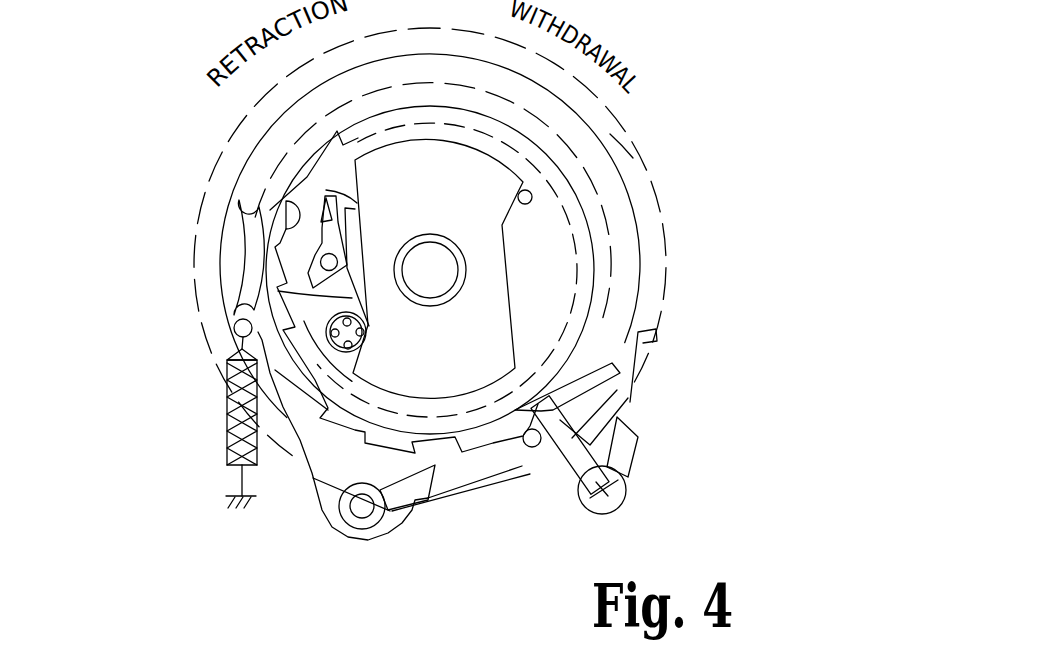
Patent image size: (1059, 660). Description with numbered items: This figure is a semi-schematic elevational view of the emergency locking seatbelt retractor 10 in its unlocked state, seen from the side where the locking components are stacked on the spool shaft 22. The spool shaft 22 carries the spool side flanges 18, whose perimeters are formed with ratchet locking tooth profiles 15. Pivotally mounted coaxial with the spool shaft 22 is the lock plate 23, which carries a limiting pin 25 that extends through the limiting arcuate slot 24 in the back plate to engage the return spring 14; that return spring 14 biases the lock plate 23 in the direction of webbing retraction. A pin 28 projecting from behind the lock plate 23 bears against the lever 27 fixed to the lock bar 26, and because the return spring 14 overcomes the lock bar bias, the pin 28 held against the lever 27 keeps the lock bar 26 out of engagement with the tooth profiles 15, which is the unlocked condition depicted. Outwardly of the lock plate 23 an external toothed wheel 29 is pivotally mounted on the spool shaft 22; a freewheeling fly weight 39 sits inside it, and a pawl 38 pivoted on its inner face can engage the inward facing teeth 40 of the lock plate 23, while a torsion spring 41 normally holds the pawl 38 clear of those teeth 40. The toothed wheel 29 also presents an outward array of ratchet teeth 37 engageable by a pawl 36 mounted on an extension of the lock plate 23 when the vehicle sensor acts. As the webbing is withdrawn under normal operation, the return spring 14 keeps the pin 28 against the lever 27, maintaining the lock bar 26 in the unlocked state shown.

The emergency locking seatbelt retractor 10 is at (78, 74).
The return spring 14 is at (219, 417).
The ratchet locking tooth profiles 15 is at (655, 345).
The spool side flanges 18 is at (668, 290).
The spool shaft 22 is at (448, 273).
The lock plate 23 is at (630, 195).
The limiting arcuate slot 24 is at (233, 258).
The limiting pin 25 is at (234, 325).
The lock bar 26 is at (633, 455).
The lever 27 is at (621, 375).
The pin 28 is at (534, 448).
The external toothed wheel 29 is at (625, 132).
The pawl 36 is at (412, 512).
The ratchet teeth 37 is at (452, 452).
The pawl 38 is at (334, 196).
The freewheeling fly weight 39 is at (512, 345).
The inward facing teeth 40 is at (307, 228).
The torsion spring 41 is at (278, 288).